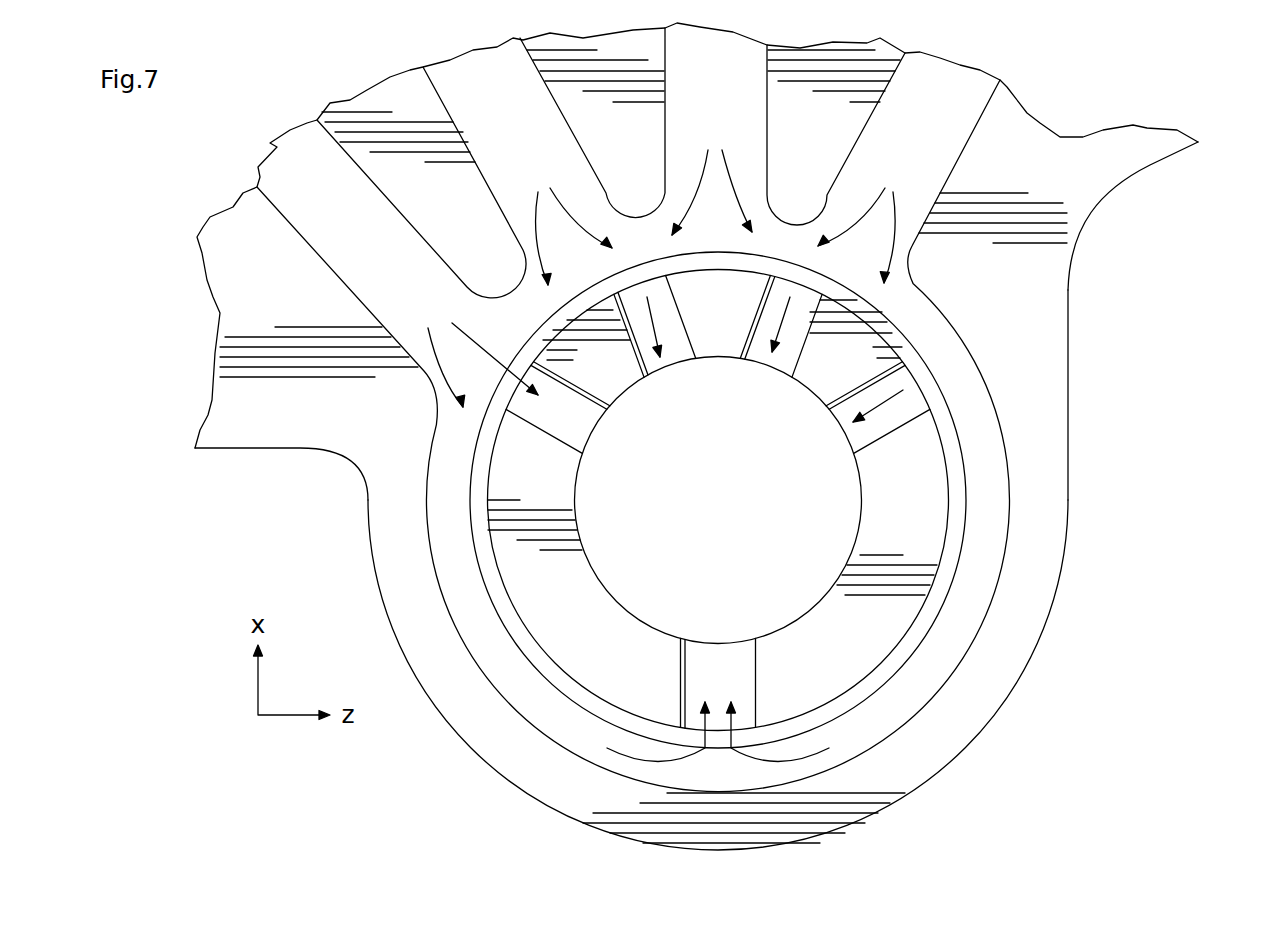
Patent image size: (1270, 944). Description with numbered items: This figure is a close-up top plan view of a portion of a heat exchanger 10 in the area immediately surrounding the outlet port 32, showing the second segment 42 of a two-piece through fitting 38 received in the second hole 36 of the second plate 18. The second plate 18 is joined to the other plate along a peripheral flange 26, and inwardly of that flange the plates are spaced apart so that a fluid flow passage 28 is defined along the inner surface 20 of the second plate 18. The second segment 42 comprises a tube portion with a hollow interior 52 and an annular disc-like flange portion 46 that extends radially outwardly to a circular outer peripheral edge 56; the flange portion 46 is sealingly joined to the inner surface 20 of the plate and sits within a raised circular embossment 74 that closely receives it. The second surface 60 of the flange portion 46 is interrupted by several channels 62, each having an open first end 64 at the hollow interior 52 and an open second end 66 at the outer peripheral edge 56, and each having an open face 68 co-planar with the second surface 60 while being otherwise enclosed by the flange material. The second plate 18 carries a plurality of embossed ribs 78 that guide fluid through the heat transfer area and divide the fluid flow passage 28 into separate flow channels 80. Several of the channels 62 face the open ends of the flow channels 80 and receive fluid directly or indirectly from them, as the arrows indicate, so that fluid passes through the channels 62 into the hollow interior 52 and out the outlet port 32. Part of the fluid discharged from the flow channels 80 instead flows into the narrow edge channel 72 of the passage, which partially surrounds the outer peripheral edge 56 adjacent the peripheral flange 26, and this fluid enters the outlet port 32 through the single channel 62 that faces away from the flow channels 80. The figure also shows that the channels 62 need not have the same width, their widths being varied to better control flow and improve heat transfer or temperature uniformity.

The heat exchanger 10 is at (1117, 572).
The second plate 18 is at (1070, 323).
The inner surface of second plate 20 is at (1070, 196).
The peripheral flange 26 is at (1040, 640).
The fluid flow passage 28 is at (970, 390).
The outlet port 32 is at (718, 500).
The hollow interior 52 is at (698, 512).
The second hole 36 is at (625, 598).
The two-piece through fitting 38 is at (500, 540).
The second segment 42 is at (870, 650).
The flange portion 46 is at (920, 518).
The outer peripheral edge 56 is at (840, 700).
The second surface 60 is at (535, 592).
The channel 62 is at (727, 669).
The open first end 64 is at (715, 640).
The open second end 66 is at (920, 380).
The open face 68 is at (683, 683).
The narrow edge channel 72 is at (583, 743).
The embossment 74 is at (500, 600).
The embossed ribs 78 is at (836, 139).
The flow channels 80 is at (926, 166).